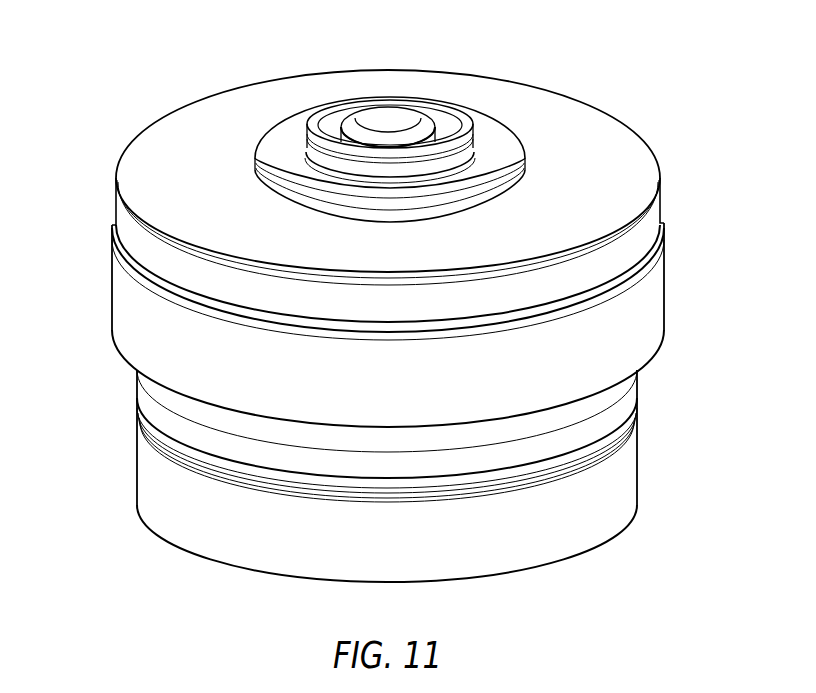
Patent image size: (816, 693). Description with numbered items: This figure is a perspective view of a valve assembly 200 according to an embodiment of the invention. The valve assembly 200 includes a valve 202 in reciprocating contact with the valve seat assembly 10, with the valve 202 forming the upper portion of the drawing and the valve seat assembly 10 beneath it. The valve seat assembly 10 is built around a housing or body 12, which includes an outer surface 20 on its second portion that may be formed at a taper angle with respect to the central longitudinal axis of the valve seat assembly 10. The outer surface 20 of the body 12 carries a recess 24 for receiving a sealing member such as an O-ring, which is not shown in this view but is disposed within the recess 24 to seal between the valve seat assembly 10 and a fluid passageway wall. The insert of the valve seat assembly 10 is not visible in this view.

The valve assembly 200 is at (84, 89).
The valve 202 is at (580, 98).
The valve seat assembly 10 is at (679, 357).
The recess 24 is at (640, 393).
The body 12 is at (644, 436).
The outer surface 20 is at (638, 472).